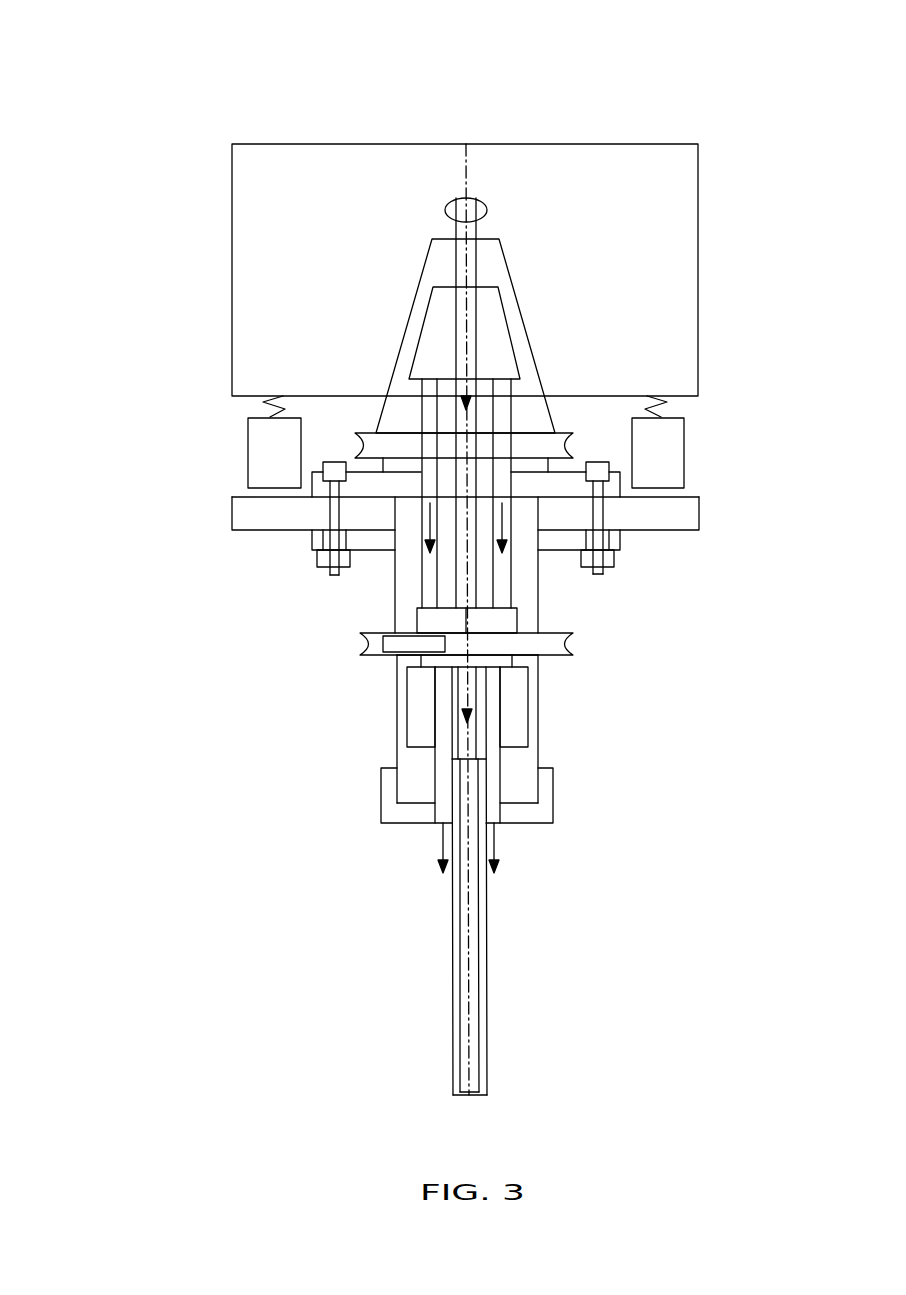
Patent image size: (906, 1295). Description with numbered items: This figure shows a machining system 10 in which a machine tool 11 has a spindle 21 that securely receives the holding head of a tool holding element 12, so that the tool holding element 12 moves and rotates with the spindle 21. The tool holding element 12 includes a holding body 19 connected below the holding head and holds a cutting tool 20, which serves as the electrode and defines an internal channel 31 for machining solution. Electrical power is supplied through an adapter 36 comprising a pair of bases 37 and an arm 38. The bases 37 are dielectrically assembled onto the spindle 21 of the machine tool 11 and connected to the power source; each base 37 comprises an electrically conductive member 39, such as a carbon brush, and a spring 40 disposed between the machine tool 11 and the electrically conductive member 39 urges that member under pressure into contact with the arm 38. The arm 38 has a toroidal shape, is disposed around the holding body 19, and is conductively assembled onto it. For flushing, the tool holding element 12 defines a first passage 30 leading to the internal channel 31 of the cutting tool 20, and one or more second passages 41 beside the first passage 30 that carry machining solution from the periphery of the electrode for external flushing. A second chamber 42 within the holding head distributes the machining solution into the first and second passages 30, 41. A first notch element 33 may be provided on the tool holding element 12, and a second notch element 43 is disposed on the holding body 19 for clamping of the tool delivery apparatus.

The machining system 10 is at (164, 46).
The machine tool 11 is at (300, 134).
The spindle 21 is at (232, 268).
The second chamber 42 is at (497, 337).
The second passages 41 is at (424, 404).
The first passage 30 is at (460, 548).
The adapter 36 is at (156, 444).
The first notch element 33 is at (555, 447).
The bases 37 is at (248, 431).
The electrically conductive member 39 is at (248, 476).
The spring 40 is at (661, 406).
The arm 38 is at (699, 512).
The second notch element 43 is at (548, 645).
The tool holding element 12 is at (407, 712).
The holding body 19 is at (530, 712).
The cutting tool 20 is at (453, 1000).
The internal channel 31 is at (477, 1005).